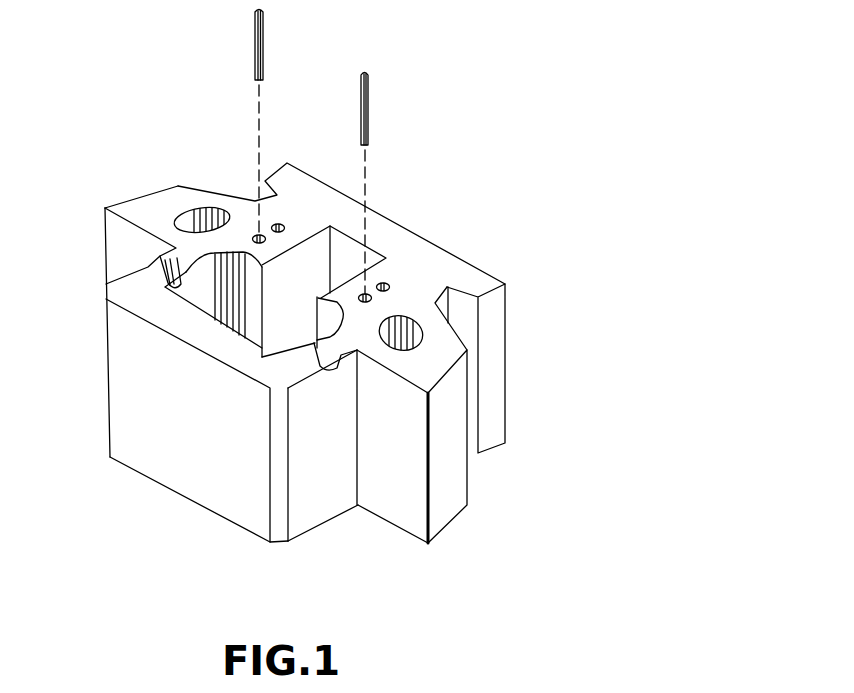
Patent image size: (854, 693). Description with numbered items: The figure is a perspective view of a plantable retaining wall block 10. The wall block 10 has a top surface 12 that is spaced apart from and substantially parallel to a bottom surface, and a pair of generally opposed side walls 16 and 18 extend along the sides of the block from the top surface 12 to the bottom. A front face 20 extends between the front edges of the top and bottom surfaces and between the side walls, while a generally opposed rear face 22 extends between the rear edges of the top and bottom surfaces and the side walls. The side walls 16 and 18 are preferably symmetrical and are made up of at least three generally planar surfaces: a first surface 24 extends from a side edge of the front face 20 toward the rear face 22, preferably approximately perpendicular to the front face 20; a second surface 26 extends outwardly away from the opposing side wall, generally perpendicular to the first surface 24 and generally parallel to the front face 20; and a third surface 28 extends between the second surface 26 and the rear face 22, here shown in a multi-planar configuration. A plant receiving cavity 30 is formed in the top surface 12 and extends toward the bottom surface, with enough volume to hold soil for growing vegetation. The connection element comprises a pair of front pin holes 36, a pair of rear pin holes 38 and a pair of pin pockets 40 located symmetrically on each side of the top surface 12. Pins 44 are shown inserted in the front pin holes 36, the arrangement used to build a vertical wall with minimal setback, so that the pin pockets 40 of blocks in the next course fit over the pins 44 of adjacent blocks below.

The wall block 10 is at (465, 164).
The top surface 12 is at (442, 258).
The side wall 16 is at (450, 448).
The side wall 18 is at (127, 203).
The front face 20 is at (160, 409).
The rear face 22 is at (400, 226).
The first surface 24 is at (356, 513).
The second surface 26 is at (429, 548).
The third surface 28 is at (527, 447).
The plant receiving cavity 30 is at (277, 318).
The front pin holes 36 is at (258, 236).
The rear pin holes 38 is at (280, 226).
The pin pockets 40 is at (190, 216).
The pins 44 is at (262, 55).